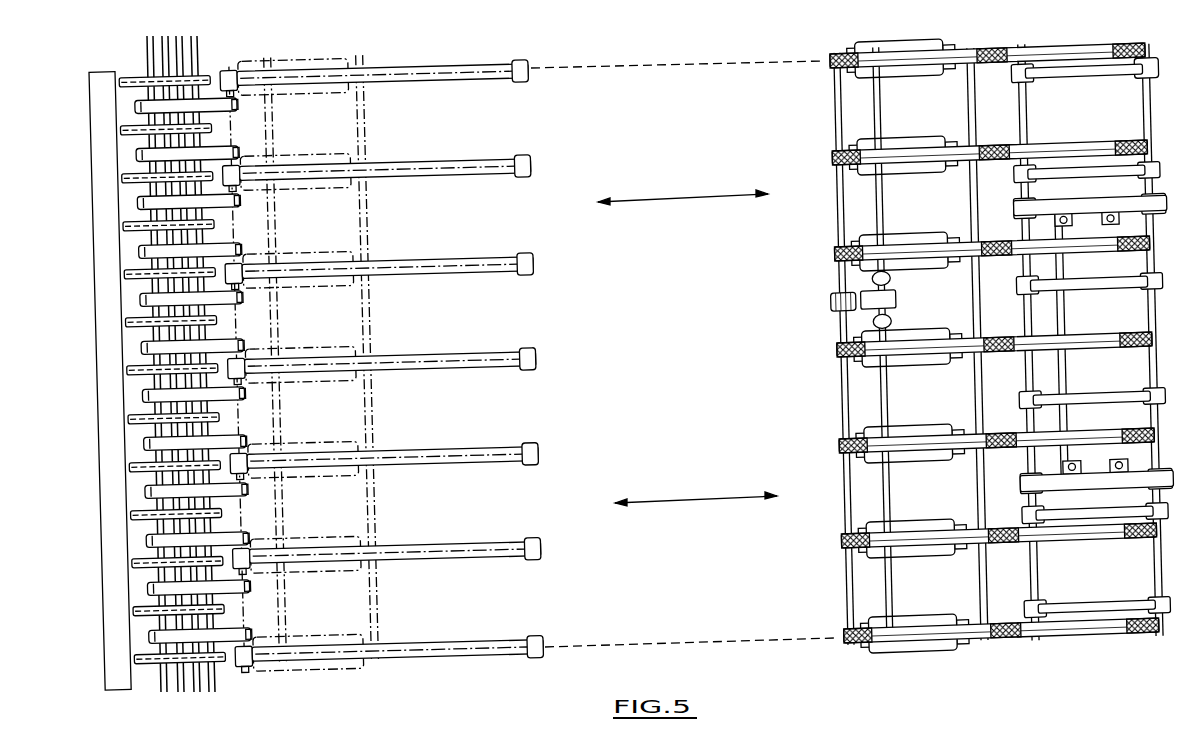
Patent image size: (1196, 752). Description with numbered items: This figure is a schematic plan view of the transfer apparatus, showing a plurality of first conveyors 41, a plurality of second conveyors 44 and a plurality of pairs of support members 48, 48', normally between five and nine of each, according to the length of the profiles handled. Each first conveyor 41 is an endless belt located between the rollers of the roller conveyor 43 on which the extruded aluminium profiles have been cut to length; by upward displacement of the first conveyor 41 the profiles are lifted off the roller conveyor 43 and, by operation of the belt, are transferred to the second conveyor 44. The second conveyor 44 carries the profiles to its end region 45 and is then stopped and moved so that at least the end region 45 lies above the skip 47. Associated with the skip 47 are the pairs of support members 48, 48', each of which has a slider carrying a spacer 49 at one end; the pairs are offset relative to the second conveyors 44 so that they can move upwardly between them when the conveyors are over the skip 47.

The first conveyor 41 is at (138, 110).
The roller conveyor 43 is at (138, 78).
The second conveyor 44 is at (338, 97).
The end region 45 is at (1076, 34).
The skip 47 is at (1164, 204).
The support member 48 is at (1090, 339).
The support member 48' is at (1160, 87).
The spacer 49 is at (1150, 180).